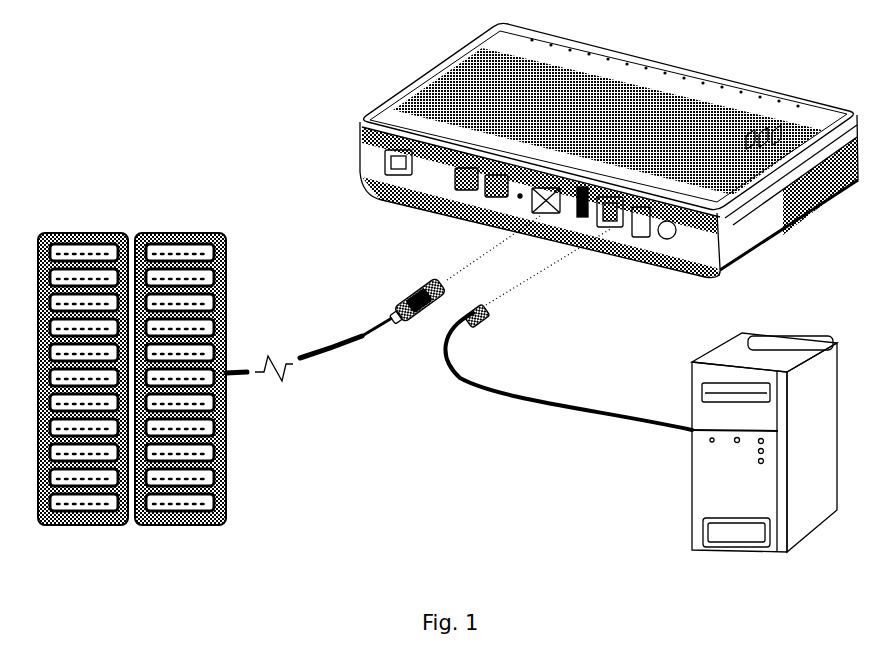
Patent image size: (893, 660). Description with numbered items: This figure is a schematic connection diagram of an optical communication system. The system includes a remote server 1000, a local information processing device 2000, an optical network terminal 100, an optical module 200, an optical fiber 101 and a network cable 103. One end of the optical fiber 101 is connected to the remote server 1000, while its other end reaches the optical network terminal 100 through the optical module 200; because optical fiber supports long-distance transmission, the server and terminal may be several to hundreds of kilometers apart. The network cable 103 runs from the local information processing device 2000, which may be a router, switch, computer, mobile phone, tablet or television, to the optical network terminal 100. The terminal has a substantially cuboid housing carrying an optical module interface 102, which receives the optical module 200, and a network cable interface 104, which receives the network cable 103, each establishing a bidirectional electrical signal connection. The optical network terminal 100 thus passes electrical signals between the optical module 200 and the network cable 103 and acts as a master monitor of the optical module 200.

The optical network terminal 100 is at (432, 60).
The optical fiber 101 is at (340, 352).
The optical module interface 102 is at (546, 215).
The network cable 103 is at (500, 385).
The network cable interface 104 is at (612, 228).
The optical module 200 is at (420, 285).
The remote server 1000 is at (204, 232).
The local information processing device 2000 is at (697, 473).